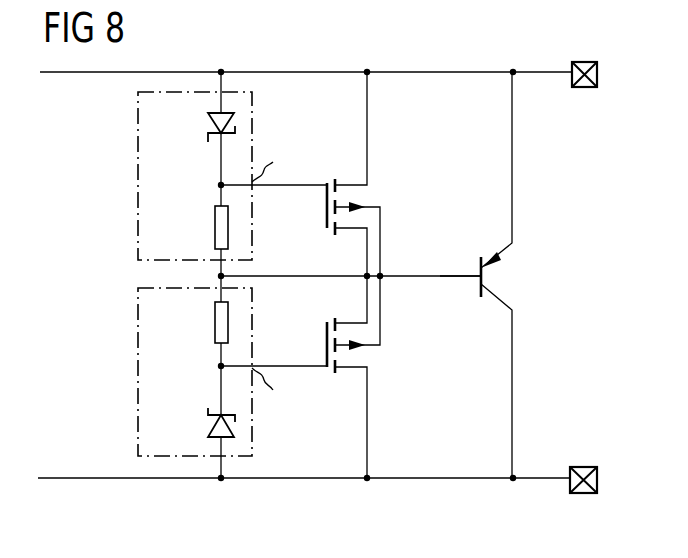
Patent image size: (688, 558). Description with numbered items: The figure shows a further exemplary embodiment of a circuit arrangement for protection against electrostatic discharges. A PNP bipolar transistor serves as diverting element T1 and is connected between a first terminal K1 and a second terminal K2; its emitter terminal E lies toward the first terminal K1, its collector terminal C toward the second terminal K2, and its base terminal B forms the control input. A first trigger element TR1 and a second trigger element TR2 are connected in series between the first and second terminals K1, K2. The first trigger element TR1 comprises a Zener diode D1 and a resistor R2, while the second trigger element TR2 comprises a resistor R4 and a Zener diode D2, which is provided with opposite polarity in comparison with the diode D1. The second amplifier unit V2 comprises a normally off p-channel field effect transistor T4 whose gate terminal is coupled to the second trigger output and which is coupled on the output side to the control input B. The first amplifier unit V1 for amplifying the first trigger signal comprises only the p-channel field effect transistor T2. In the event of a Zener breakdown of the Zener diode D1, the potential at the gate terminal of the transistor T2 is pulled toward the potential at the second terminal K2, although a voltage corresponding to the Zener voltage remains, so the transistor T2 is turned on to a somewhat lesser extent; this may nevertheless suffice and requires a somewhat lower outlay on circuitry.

The first trigger element TR1 is at (138, 356).
The second trigger element TR2 is at (138, 158).
The Zener diode D1 is at (211, 428).
The Zener diode D2 is at (213, 128).
The resistor R2 is at (215, 321).
The resistor R4 is at (215, 226).
The p-channel field effect transistor T2 is at (327, 344).
The p-channel field effect transistor T4 is at (327, 207).
The diverting element T1 is at (486, 279).
The first amplifier unit V1 is at (388, 377).
The second amplifier unit V2 is at (385, 160).
The first terminal K1 is at (584, 88).
The second terminal K2 is at (583, 467).
The emitter terminal E is at (496, 170).
The control input or base terminal B is at (460, 265).
The collector terminal C is at (496, 381).